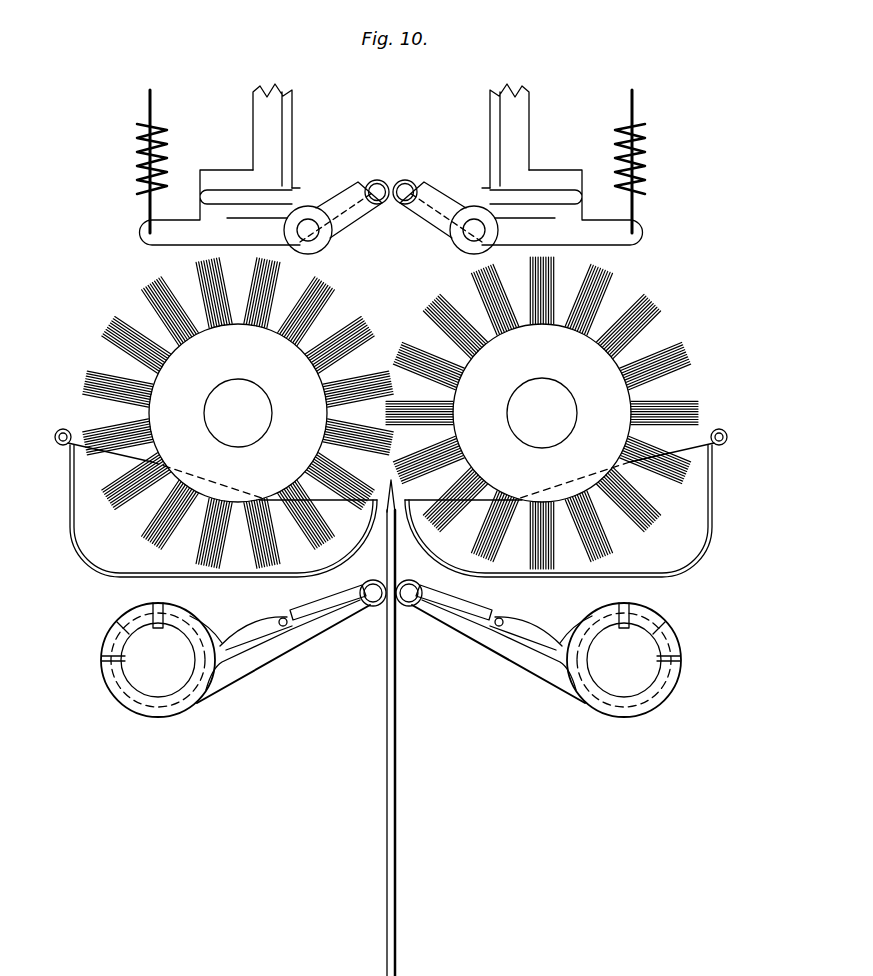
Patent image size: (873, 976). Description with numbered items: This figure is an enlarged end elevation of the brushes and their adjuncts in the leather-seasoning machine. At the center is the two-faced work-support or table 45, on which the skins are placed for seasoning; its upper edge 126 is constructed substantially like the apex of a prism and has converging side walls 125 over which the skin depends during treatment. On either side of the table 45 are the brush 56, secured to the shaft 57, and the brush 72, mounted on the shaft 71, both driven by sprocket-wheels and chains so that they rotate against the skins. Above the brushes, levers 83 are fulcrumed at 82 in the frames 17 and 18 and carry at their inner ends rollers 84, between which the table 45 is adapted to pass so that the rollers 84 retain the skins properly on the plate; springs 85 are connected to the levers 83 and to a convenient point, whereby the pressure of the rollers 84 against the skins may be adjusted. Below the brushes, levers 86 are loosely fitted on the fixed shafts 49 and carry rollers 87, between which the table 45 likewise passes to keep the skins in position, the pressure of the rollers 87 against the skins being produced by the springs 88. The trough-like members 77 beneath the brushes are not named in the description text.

The frame 17 is at (268, 115).
The frame 18 is at (514, 120).
The two-faced work-support 45 is at (373, 743).
The fixed shaft 49 is at (391, 660).
The brush 56 is at (122, 340).
The shaft 57 is at (238, 413).
The shaft 71 is at (542, 413).
The brush 72 is at (542, 413).
The brush tray 77 is at (75, 545).
The fulcrum 82 is at (318, 240).
The lever 83 is at (391, 207).
The roller 84 is at (408, 206).
The spring 85 is at (148, 168).
The lever 86 is at (308, 630).
The roller 87 is at (366, 607).
The spring 88 is at (237, 630).
The converging side wall 125 is at (376, 504).
The upper edge 126 is at (388, 489).